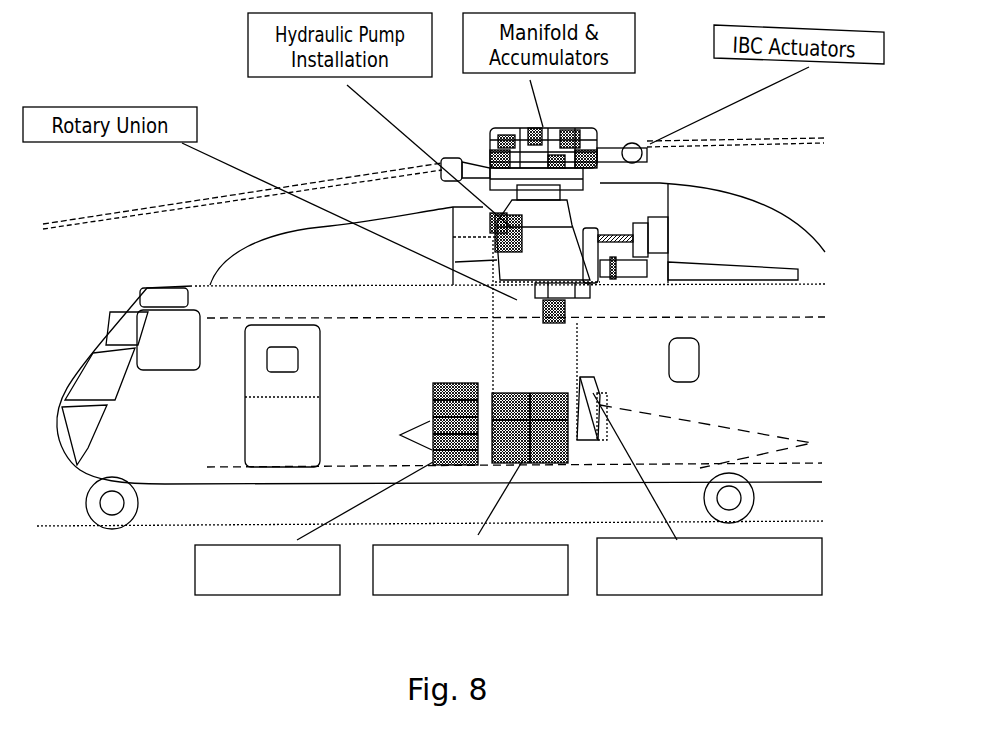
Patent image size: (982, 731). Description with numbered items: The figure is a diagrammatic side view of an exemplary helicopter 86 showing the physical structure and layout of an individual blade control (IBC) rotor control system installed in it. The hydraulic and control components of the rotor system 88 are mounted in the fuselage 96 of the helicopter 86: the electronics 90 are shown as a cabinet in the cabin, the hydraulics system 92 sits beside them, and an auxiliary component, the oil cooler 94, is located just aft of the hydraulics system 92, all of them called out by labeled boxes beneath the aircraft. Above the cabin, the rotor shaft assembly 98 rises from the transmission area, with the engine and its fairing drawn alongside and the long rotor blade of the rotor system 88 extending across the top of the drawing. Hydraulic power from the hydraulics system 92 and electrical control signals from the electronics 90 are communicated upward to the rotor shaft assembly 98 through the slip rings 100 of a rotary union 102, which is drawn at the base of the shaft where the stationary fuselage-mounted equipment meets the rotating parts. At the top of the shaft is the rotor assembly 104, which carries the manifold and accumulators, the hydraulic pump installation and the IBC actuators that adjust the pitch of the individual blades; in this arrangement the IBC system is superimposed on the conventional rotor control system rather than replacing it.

The helicopter 86 is at (82, 290).
The rotor system 88 is at (834, 185).
The electronics 90 is at (242, 597).
The hydraulics system 92 is at (420, 597).
The oil cooler 94 is at (680, 595).
The fuselage 96 is at (253, 487).
The rotor shaft assembly 98 is at (605, 221).
The slip rings 100 is at (570, 307).
The rotary union 102 is at (543, 322).
The rotor assembly 104 is at (413, 232).